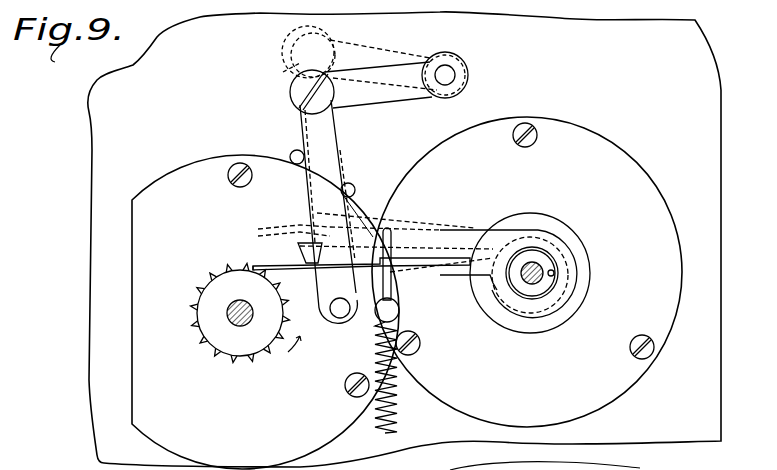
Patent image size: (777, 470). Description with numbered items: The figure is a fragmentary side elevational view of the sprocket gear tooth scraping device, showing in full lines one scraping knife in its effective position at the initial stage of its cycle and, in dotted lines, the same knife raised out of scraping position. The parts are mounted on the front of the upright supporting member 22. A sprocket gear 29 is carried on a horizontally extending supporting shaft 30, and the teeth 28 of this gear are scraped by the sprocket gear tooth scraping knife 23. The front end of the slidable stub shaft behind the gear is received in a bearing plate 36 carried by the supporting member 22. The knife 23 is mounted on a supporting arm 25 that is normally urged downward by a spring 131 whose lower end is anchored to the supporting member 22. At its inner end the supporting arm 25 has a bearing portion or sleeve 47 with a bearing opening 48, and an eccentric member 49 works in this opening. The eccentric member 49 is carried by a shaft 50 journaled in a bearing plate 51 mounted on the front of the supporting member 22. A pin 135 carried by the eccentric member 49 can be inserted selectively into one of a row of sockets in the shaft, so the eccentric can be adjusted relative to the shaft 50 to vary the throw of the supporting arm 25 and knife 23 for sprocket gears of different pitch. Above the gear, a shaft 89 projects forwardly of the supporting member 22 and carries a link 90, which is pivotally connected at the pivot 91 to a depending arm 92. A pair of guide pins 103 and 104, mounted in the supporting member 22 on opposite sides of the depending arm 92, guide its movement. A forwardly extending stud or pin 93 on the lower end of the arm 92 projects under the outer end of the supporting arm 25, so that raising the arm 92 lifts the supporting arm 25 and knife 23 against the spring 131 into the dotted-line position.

The upright supporting member 22 is at (722, 210).
The sprocket gear tooth scraping knife 23 is at (272, 262).
The supporting arm 25 is at (447, 238).
The teeth 28 is at (220, 267).
The sprocket gear 29 is at (236, 352).
The supporting shaft 30 is at (248, 293).
The bearing plate 36 is at (326, 432).
The bearing portion or sleeve 47 is at (538, 240).
The bearing opening 48 is at (560, 276).
The eccentric member 49 is at (548, 290).
The shaft 50 is at (540, 266).
The bearing plate 51 is at (618, 386).
The shaft 89 is at (452, 73).
The link 90 is at (392, 76).
The pivotal connection 91 is at (292, 92).
The depending arm 92 is at (341, 165).
The stud or pin 93 is at (333, 311).
The guide pin 103 is at (291, 153).
The guide pin 104 is at (353, 187).
The spring 131 is at (396, 412).
The pin 135 is at (556, 272).